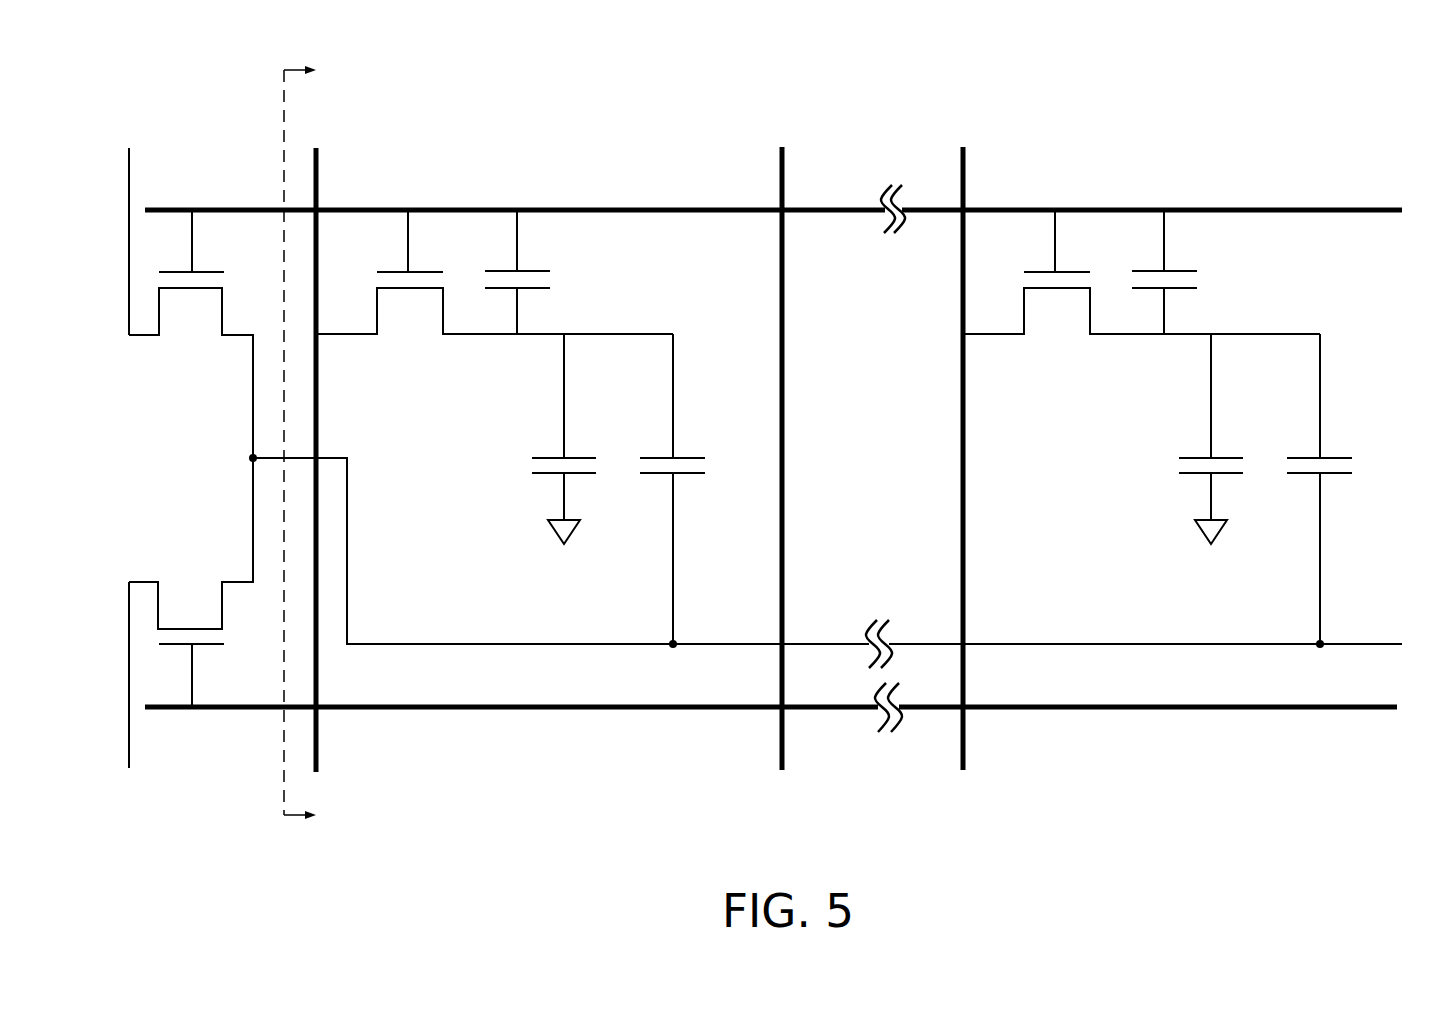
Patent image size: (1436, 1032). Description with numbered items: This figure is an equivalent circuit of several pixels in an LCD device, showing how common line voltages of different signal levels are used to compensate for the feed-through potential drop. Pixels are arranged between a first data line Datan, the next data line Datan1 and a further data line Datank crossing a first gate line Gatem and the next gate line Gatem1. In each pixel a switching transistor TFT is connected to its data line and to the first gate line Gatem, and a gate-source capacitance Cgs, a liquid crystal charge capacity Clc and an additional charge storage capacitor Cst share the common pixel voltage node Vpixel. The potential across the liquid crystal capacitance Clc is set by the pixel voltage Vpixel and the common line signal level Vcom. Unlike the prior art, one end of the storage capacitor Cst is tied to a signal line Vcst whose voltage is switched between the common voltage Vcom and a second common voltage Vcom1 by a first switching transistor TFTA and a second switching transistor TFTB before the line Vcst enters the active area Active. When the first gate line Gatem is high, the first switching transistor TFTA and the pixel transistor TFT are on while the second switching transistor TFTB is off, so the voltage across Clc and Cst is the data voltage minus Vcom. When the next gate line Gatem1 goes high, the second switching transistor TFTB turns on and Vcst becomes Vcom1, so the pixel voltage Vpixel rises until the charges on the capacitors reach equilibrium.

The common line signal level Vcom is at (130, 226).
The second common line voltage Vcom1 is at (138, 698).
The switching TFT A TFTA is at (191, 334).
The switching TFT B TFTB is at (191, 582).
The pixel TFT is at (740, 295).
The active area Active is at (349, 441).
The data line n Datan is at (359, 438).
The data line n+1 Datan1 is at (833, 437).
The data line n+k Datank is at (1034, 437).
The gate line m Gatem is at (776, 205).
The gate line m+1 Gatem1 is at (773, 717).
The Vcst signal line Vcst is at (828, 563).
The pixel voltage Vpixel is at (950, 315).
The gate-source capacitance Cgs is at (875, 272).
The liquid crystal charge capacity Clc is at (865, 458).
The additional charge storage capacitor Cst is at (1022, 489).